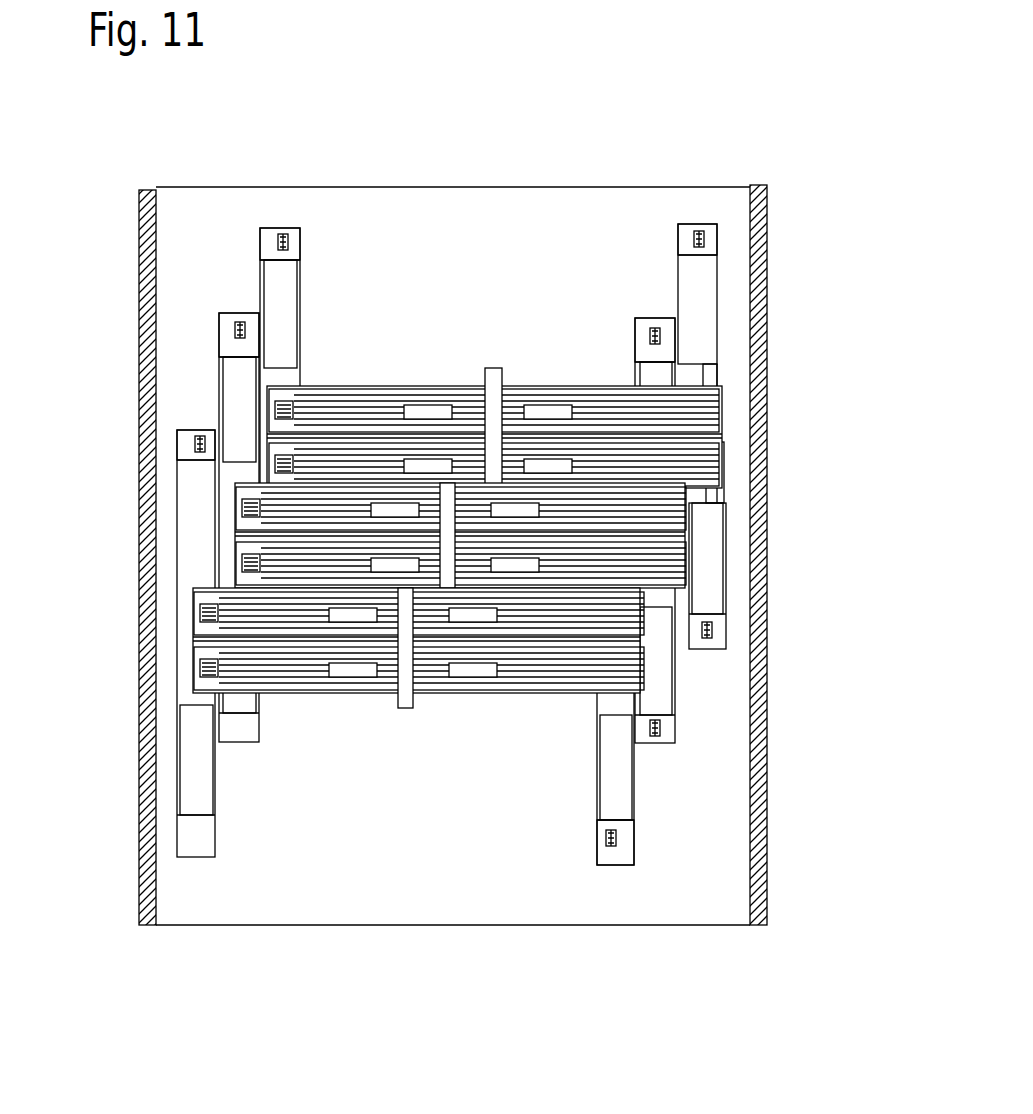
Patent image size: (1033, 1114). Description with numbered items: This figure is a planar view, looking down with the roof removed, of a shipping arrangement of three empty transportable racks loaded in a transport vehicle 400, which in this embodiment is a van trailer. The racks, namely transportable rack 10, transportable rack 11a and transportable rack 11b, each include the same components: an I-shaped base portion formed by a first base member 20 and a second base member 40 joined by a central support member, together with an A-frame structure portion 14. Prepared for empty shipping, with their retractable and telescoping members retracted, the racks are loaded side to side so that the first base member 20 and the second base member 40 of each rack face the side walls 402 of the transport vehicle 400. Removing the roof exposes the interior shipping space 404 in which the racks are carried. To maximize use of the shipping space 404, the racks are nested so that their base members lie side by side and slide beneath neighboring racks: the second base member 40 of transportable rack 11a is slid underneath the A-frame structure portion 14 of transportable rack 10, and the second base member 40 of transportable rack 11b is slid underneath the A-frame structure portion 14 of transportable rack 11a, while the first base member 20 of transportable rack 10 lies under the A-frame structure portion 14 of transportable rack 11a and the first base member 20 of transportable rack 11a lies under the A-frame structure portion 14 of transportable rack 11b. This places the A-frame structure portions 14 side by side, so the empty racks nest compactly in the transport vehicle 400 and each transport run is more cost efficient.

The transportable rack 10 is at (768, 568).
The transportable rack 11a is at (680, 703).
The transportable rack 11b is at (637, 803).
The A-frame structure portion 14 is at (490, 370).
The first base member 20 is at (283, 243).
The second base member 40 is at (690, 246).
The transport vehicle 400 is at (808, 884).
The side walls 402 is at (767, 240).
The shipping space 404 is at (386, 900).